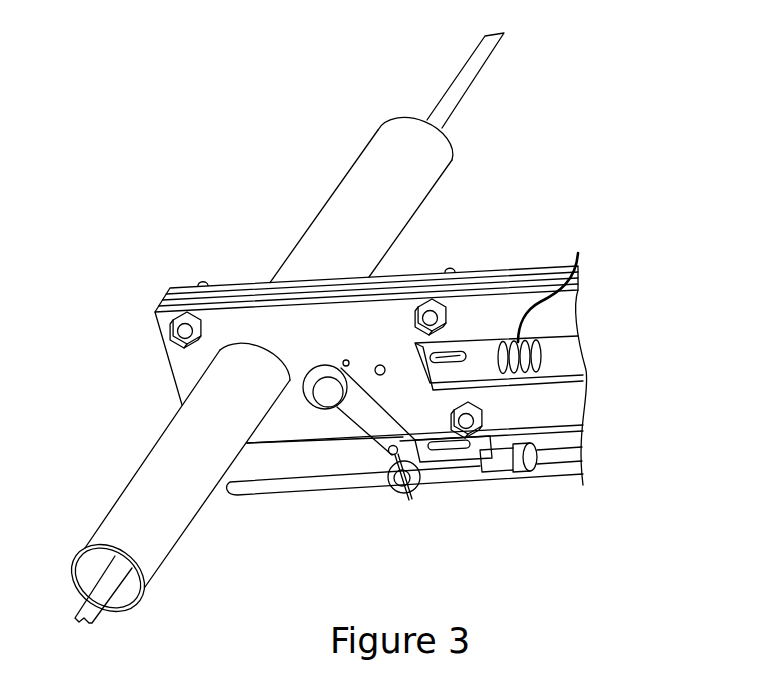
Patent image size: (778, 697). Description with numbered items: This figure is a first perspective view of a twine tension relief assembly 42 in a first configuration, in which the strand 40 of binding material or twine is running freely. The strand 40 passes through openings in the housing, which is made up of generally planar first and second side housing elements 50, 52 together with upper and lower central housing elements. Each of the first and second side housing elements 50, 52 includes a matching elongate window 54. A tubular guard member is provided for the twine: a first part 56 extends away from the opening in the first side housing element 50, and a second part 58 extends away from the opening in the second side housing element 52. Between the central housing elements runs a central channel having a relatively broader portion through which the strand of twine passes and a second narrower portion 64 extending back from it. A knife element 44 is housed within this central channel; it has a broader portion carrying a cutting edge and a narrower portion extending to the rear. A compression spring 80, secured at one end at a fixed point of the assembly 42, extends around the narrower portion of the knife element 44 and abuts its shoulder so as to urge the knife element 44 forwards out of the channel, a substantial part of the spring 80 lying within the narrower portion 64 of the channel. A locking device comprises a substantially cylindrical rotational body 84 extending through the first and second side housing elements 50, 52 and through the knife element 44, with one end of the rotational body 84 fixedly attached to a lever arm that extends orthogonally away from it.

The strand of binding material or twine 40 is at (478, 77).
The twine tension relief assembly 42 is at (152, 212).
The knife element 44 is at (491, 372).
The first side housing element 50 is at (503, 280).
The second side housing element 52 is at (562, 315).
The elongate window 54 is at (467, 340).
The first part of tubular guard member 56 is at (358, 157).
The second part of tubular guard member 58 is at (163, 457).
The second narrower portion of central channel 64 is at (583, 387).
The compression spring 80 is at (566, 281).
The rotational body 84 is at (327, 393).